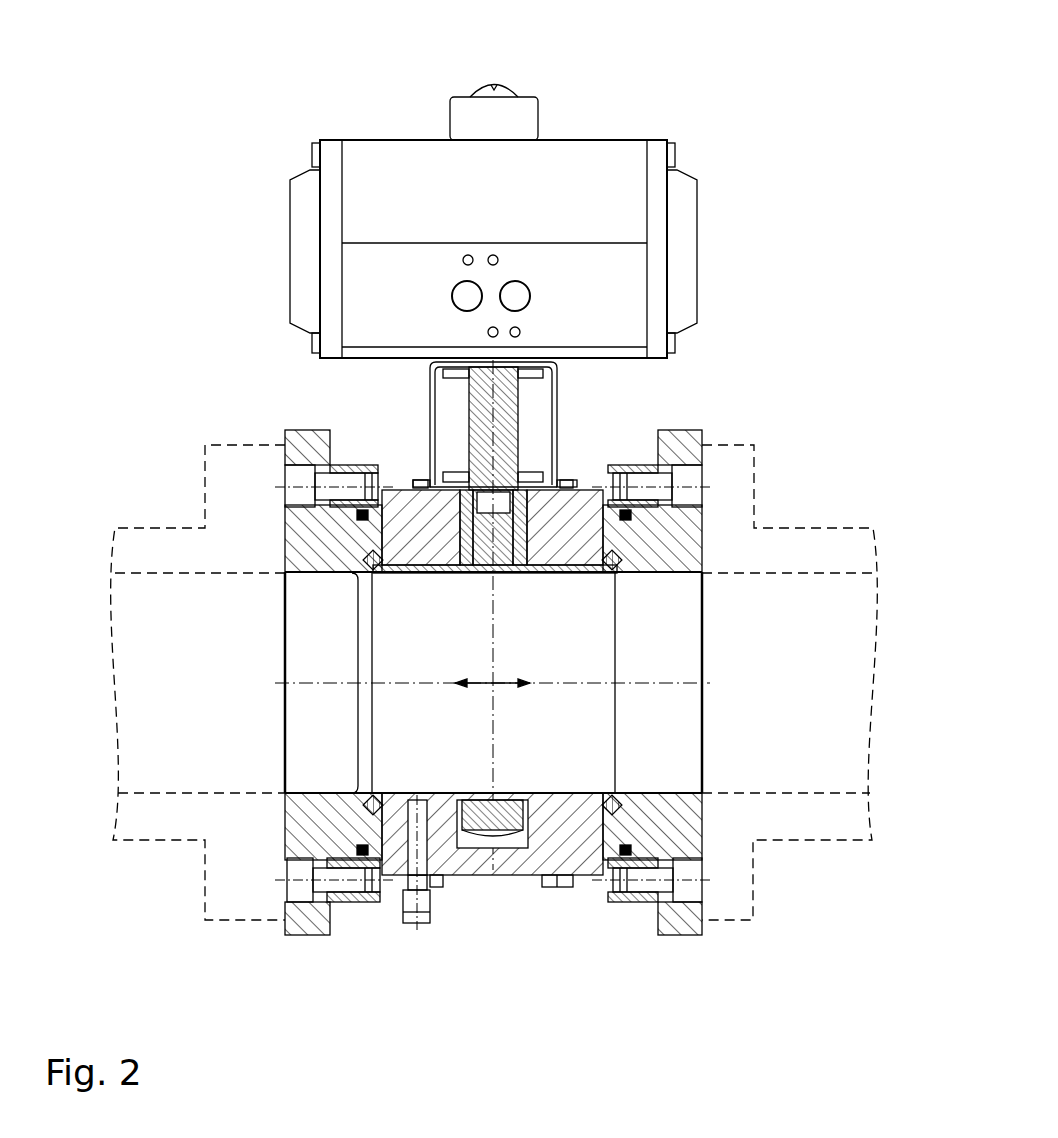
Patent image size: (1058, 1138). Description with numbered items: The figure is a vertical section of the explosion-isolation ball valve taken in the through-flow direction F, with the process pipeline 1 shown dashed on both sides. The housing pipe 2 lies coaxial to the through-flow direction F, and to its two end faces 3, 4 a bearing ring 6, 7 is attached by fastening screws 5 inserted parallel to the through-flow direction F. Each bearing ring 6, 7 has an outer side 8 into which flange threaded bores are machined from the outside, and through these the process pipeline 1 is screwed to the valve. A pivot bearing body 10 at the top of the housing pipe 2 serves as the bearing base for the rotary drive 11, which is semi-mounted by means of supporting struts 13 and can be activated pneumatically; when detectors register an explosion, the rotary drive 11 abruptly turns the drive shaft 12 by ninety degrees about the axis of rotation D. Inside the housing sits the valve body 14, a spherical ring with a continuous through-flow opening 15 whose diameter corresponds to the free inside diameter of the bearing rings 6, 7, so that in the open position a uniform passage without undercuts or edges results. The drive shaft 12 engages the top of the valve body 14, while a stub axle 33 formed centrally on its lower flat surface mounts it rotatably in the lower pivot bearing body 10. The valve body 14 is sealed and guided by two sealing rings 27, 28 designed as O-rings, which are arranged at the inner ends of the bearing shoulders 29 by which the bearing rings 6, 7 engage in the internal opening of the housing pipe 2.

The process pipeline 1 is at (158, 840).
The housing pipe 2 is at (642, 902).
The end face 3 is at (413, 480).
The end face 4 is at (603, 467).
The fastening screws 5 is at (300, 497).
The bearing ring 6 is at (308, 927).
The bearing ring 7 is at (683, 923).
The outer side 8 is at (290, 527).
The pivot bearing body 10 is at (397, 483).
The rotary drive 11 is at (653, 138).
The drive shaft 12 is at (478, 378).
The supporting struts 13 is at (593, 462).
The valve body 14 is at (577, 790).
The through-flow opening 15 is at (358, 670).
The sealing ring 27 is at (358, 793).
The sealing ring 28 is at (617, 793).
The bearing shoulders 29 is at (372, 835).
The stub axle 33 is at (497, 840).
The axis of rotation D is at (493, 655).
The through-flow direction F is at (477, 793).